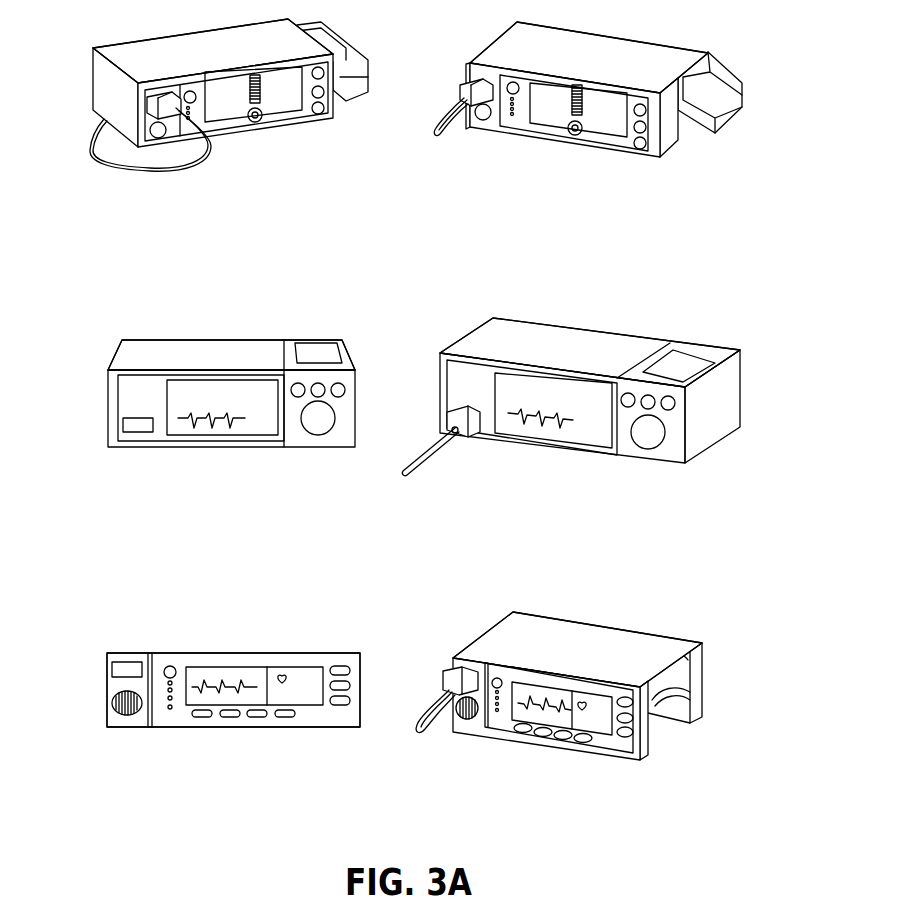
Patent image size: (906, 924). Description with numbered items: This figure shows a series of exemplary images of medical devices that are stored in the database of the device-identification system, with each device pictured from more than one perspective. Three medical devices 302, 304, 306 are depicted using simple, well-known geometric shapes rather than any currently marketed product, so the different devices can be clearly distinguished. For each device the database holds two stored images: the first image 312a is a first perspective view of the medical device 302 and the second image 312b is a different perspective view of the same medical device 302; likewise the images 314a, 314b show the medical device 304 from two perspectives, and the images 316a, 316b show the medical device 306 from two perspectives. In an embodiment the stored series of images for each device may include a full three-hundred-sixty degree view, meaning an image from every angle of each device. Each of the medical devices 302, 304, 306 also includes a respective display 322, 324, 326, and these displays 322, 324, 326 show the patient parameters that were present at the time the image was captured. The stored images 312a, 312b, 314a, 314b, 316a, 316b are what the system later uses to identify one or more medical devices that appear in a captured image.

The medical device 302 is at (132, 43).
The first image 312a is at (80, 107).
The second image 312b is at (719, 52).
The display 322 is at (237, 125).
The medical device 304 is at (143, 348).
The image 314a is at (86, 417).
The image 314b is at (724, 335).
The display 324 is at (222, 428).
The medical device 306 is at (200, 653).
The image 316a is at (86, 688).
The image 316b is at (724, 671).
The display 326 is at (232, 698).